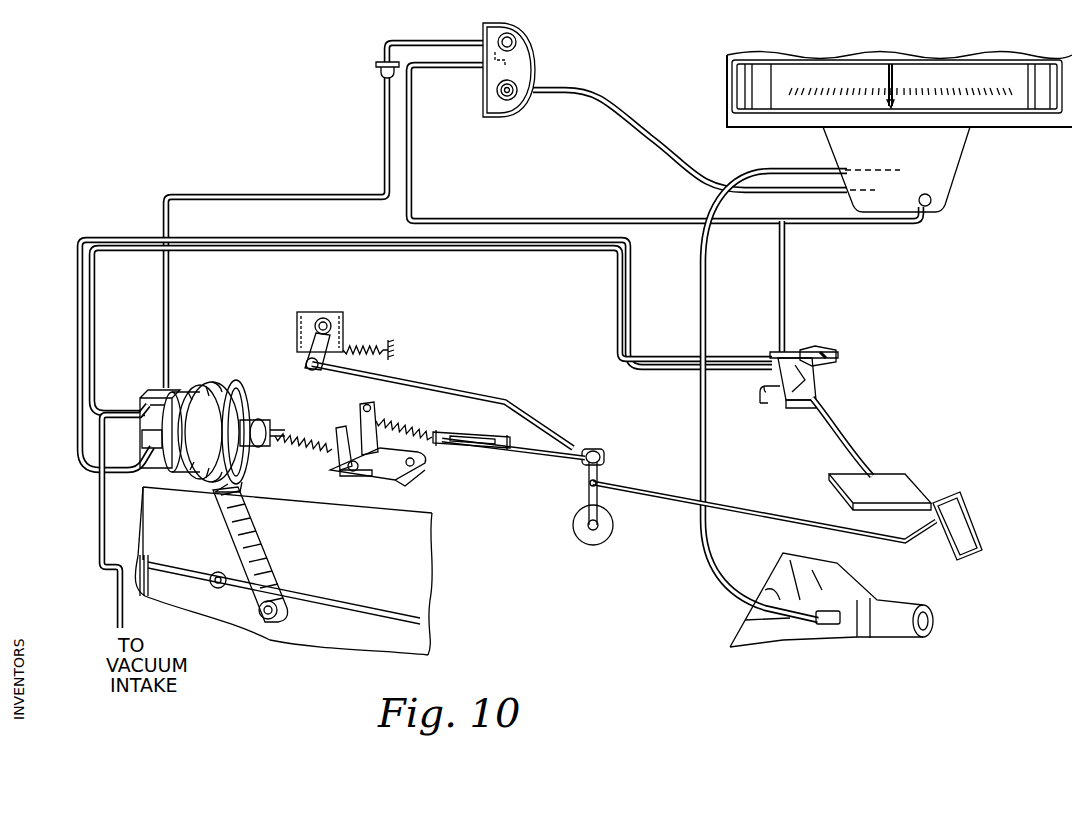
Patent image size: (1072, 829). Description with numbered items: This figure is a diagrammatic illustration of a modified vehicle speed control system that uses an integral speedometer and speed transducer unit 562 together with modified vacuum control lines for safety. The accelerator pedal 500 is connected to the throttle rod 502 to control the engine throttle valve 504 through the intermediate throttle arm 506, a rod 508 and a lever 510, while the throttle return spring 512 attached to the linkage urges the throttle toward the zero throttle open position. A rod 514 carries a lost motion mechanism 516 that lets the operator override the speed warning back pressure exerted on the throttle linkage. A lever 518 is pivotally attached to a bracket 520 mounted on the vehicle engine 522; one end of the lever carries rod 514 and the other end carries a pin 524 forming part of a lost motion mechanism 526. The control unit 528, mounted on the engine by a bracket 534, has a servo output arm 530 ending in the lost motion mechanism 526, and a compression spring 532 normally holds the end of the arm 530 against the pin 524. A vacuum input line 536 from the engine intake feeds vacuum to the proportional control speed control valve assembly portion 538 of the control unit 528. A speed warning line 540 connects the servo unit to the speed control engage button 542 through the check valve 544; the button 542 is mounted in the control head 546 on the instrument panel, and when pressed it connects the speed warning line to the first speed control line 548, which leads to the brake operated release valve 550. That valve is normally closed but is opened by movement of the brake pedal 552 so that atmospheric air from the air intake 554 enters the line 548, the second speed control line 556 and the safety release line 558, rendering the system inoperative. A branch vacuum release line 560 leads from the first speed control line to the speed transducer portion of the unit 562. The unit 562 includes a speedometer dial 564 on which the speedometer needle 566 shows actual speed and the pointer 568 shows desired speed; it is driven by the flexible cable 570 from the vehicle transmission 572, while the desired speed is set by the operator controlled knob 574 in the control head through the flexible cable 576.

The accelerator pedal 500 is at (962, 522).
The throttle rod 502 is at (670, 495).
The engine throttle valve 504 is at (345, 325).
The intermediate throttle arm 506 is at (302, 355).
The rod 508 is at (470, 385).
The lever 510 is at (605, 502).
The throttle return spring 512 is at (376, 350).
The rod 514 is at (535, 456).
The lost motion mechanism 516 is at (450, 446).
The lever 518 is at (362, 414).
The bracket 520 is at (400, 470).
The vehicle engine 522 is at (175, 605).
The pin 524 is at (340, 450).
The lost motion mechanism 526 is at (355, 470).
The control unit 528 is at (215, 390).
The servo output arm 530 is at (330, 460).
The compression spring 532 is at (285, 438).
The bracket 534 is at (272, 560).
The vacuum input line 536 is at (100, 540).
The proportional control speed control valve assembly portion 538 is at (150, 400).
The speed warning line 540 is at (290, 197).
The speed control engage button 542 is at (510, 35).
The check valve 544 is at (378, 70).
The control head 546 is at (483, 30).
The first speed control line 548 is at (410, 188).
The brake operated release valve 550 is at (838, 362).
The brake pedal 552 is at (910, 475).
The air intake 554 is at (765, 393).
The second speed control line 556 is at (315, 226).
The safety release line 558 is at (276, 250).
The branch vacuum release line 560 is at (895, 224).
The speedometer and speed transducer unit 562 is at (955, 172).
The speedometer dial 564 is at (800, 62).
The speedometer needle 566 is at (892, 95).
The pointer 568 is at (890, 104).
The flexible cable 570 is at (700, 390).
The vehicle transmission 572 is at (830, 640).
The operator controlled knob 574 is at (503, 100).
The flexible cable 576 is at (640, 122).